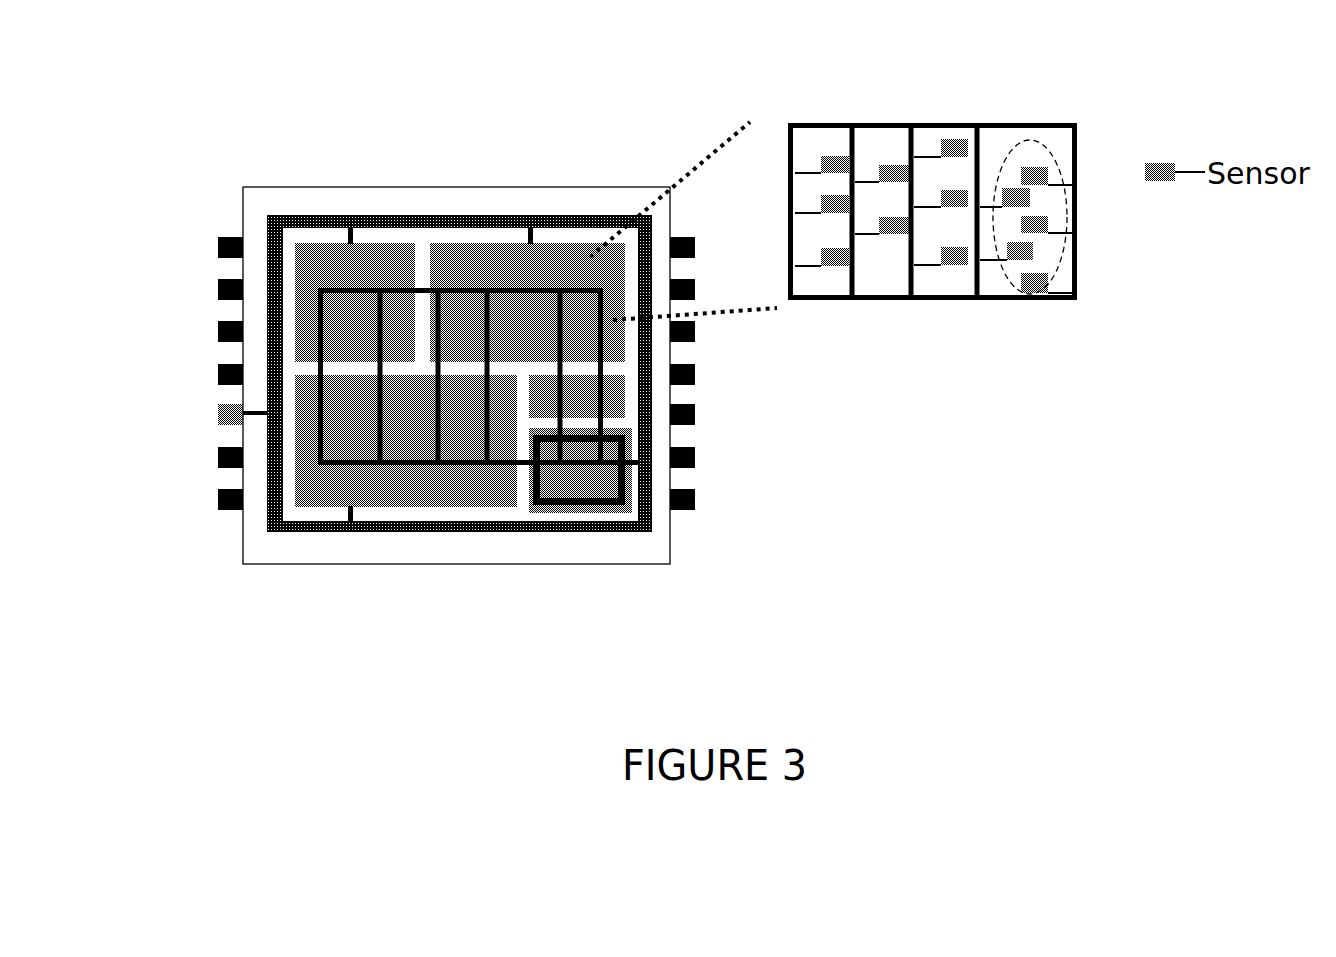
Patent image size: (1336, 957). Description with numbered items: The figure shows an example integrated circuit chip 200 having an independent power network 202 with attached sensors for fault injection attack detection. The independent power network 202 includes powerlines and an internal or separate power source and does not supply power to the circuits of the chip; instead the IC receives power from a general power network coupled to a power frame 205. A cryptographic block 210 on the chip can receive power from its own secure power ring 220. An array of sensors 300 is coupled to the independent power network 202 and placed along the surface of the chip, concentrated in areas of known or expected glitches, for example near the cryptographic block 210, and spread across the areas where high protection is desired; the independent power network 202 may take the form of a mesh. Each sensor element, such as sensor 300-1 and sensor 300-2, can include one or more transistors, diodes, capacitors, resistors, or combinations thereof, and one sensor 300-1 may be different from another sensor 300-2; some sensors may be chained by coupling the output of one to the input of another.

The chip 200 is at (253, 219).
The independent power network 202 is at (340, 290).
The power frame 205 is at (495, 217).
The cryptographic block 210 is at (532, 497).
The secure power ring 220 is at (580, 512).
The array of sensors 300 is at (1070, 298).
The sensor 300-1 is at (1035, 166).
The sensor 300-2 is at (1010, 188).